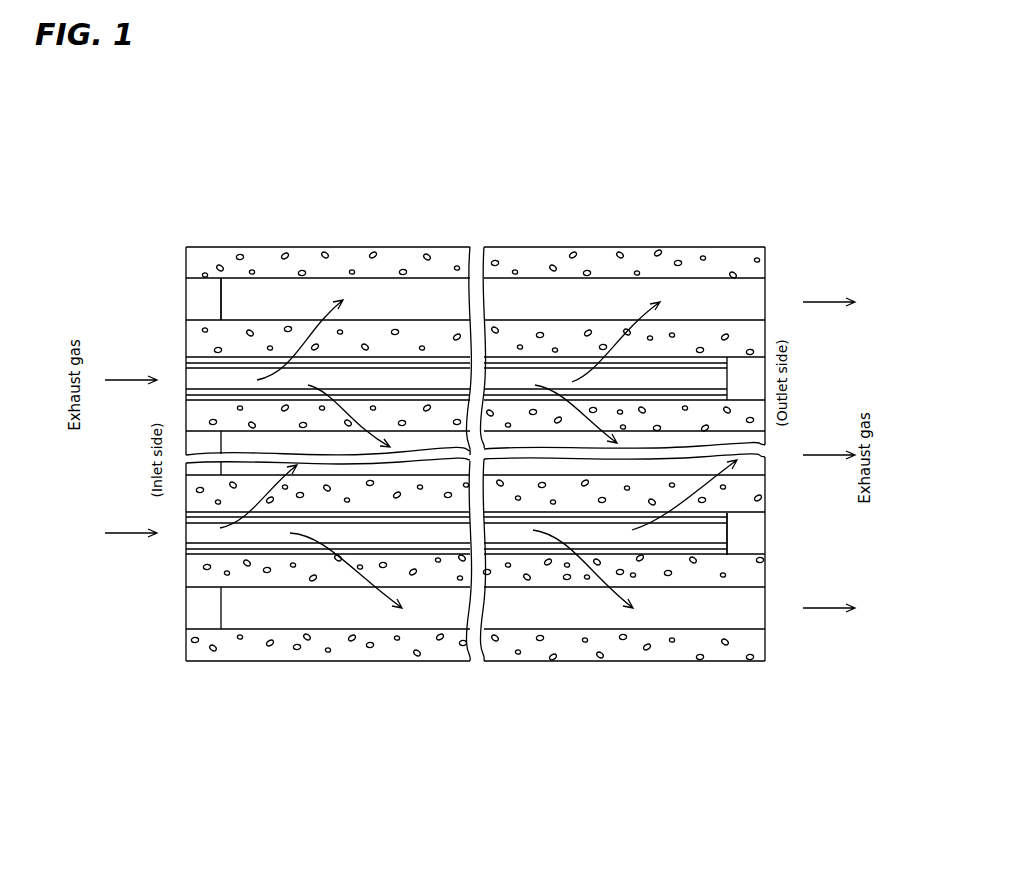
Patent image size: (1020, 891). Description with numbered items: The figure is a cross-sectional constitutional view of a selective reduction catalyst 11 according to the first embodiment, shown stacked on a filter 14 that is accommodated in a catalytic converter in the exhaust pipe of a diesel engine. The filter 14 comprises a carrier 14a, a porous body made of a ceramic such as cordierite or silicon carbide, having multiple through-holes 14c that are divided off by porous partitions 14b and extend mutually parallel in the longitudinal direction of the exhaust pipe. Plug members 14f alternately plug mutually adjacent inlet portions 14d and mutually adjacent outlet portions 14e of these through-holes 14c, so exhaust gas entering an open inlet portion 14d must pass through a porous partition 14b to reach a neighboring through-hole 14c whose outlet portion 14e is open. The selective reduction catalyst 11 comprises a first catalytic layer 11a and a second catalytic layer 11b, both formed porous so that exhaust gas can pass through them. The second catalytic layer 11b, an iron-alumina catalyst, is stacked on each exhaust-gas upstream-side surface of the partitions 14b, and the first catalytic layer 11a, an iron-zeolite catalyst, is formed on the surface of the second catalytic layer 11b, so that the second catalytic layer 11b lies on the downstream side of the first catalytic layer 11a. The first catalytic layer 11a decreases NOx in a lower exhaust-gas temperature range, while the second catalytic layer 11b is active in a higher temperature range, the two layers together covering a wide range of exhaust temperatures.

The selective reduction catalyst 11 is at (83, 220).
The first catalytic layer 11a is at (212, 372).
The second catalytic layer 11b is at (203, 357).
The filter 14 is at (324, 208).
The carrier 14a is at (380, 233).
The partitions 14b is at (560, 322).
The through-holes 14c is at (627, 282).
The inlet portions 14d is at (196, 281).
The outlet portions 14e is at (747, 516).
The plug members 14f is at (221, 311).